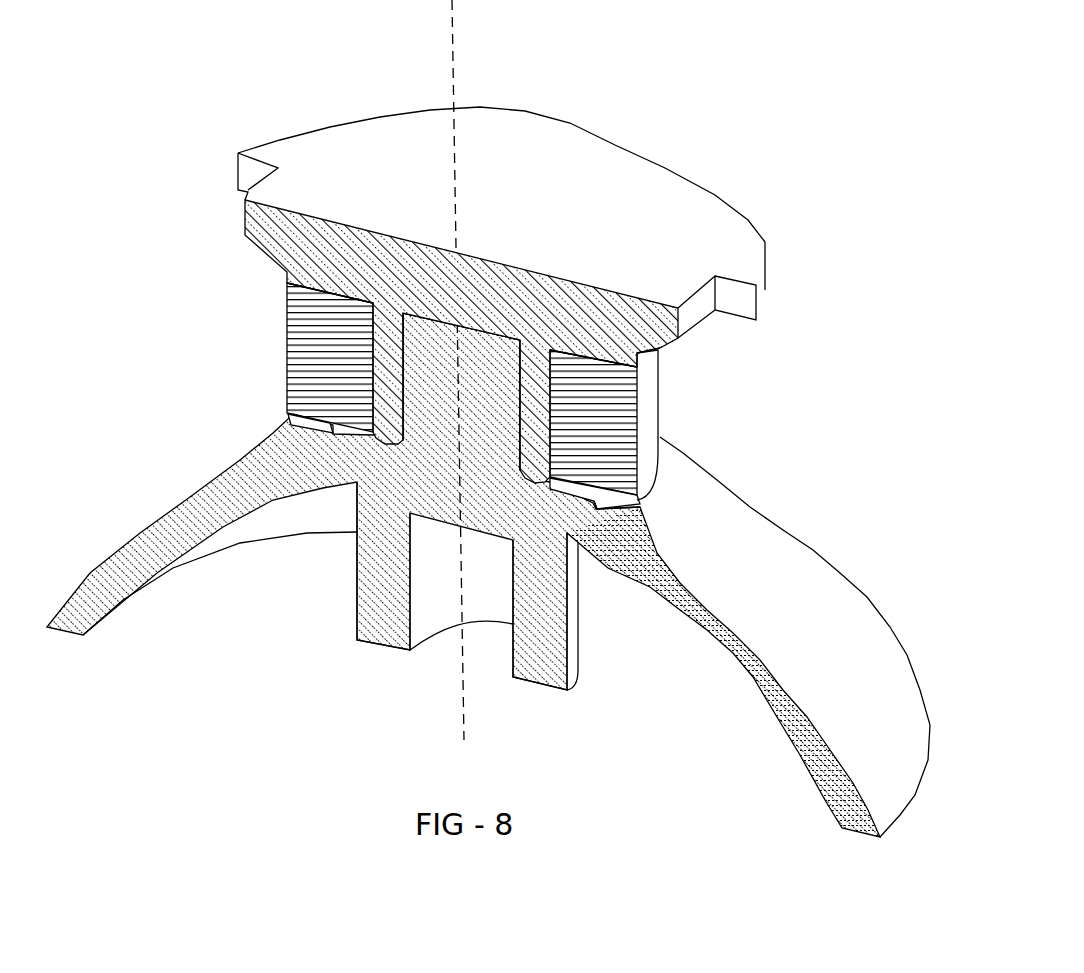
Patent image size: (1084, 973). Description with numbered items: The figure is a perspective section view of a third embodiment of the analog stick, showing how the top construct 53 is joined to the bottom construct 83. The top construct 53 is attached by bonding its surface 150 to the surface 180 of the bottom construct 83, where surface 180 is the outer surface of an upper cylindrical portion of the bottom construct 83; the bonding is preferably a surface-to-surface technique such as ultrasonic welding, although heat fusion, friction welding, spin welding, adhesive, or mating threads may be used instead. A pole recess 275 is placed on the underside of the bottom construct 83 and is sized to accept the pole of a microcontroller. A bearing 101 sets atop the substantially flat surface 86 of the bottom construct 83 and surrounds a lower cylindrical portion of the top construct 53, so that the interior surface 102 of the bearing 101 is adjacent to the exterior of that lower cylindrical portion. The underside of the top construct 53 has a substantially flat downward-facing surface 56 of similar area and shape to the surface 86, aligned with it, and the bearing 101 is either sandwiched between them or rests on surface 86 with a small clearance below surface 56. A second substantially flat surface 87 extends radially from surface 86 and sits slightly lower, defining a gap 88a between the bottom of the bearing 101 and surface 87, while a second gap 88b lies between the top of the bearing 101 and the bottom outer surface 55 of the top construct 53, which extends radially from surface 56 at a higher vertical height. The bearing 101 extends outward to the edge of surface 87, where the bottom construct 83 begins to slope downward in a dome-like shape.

The top construct 53 is at (518, 140).
The bottom outer surface 55 is at (587, 388).
The downward-facing surface 56 is at (567, 350).
The bearing 101 is at (612, 352).
The interior surface 102 is at (377, 330).
The surface 150 is at (520, 392).
The surface 180 is at (518, 422).
The second gap 88b is at (637, 367).
The gap 88a is at (647, 498).
The substantially flat surface 86 is at (577, 485).
The second substantially flat surface 87 is at (610, 500).
The bottom construct 83 is at (787, 602).
The pole recess 275 is at (432, 602).